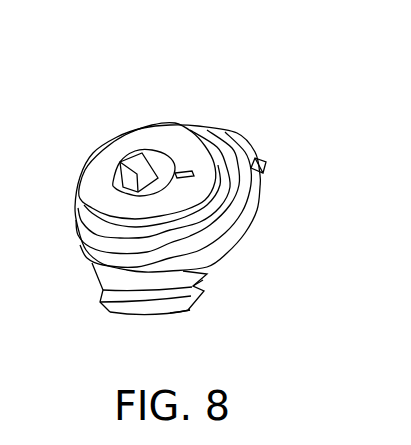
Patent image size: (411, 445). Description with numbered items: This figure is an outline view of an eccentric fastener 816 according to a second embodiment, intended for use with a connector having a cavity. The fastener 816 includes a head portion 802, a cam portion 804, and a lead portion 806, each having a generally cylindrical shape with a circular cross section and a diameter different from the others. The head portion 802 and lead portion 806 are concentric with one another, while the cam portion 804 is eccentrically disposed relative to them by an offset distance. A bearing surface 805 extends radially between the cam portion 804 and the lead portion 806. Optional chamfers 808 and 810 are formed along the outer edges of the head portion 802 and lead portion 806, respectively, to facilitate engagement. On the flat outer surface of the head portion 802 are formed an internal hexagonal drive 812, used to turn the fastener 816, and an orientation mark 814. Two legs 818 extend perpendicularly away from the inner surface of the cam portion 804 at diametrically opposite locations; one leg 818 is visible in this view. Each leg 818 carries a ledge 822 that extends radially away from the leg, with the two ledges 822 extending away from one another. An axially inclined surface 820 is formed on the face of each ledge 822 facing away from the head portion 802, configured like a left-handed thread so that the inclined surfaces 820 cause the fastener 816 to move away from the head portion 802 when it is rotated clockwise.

The head portion 802 is at (167, 142).
The cam portion 804 is at (243, 218).
The bearing surface 805 is at (242, 188).
The lead portion 806 is at (106, 249).
The chamfer 808 is at (80, 212).
The chamfer 810 is at (230, 150).
The internal hexagonal drive 812 is at (135, 170).
The orientation mark 814 is at (187, 170).
The fastener 816 is at (277, 156).
The leg 818 is at (196, 279).
The axially inclined surface 820 is at (150, 312).
The ledge 822 is at (195, 306).